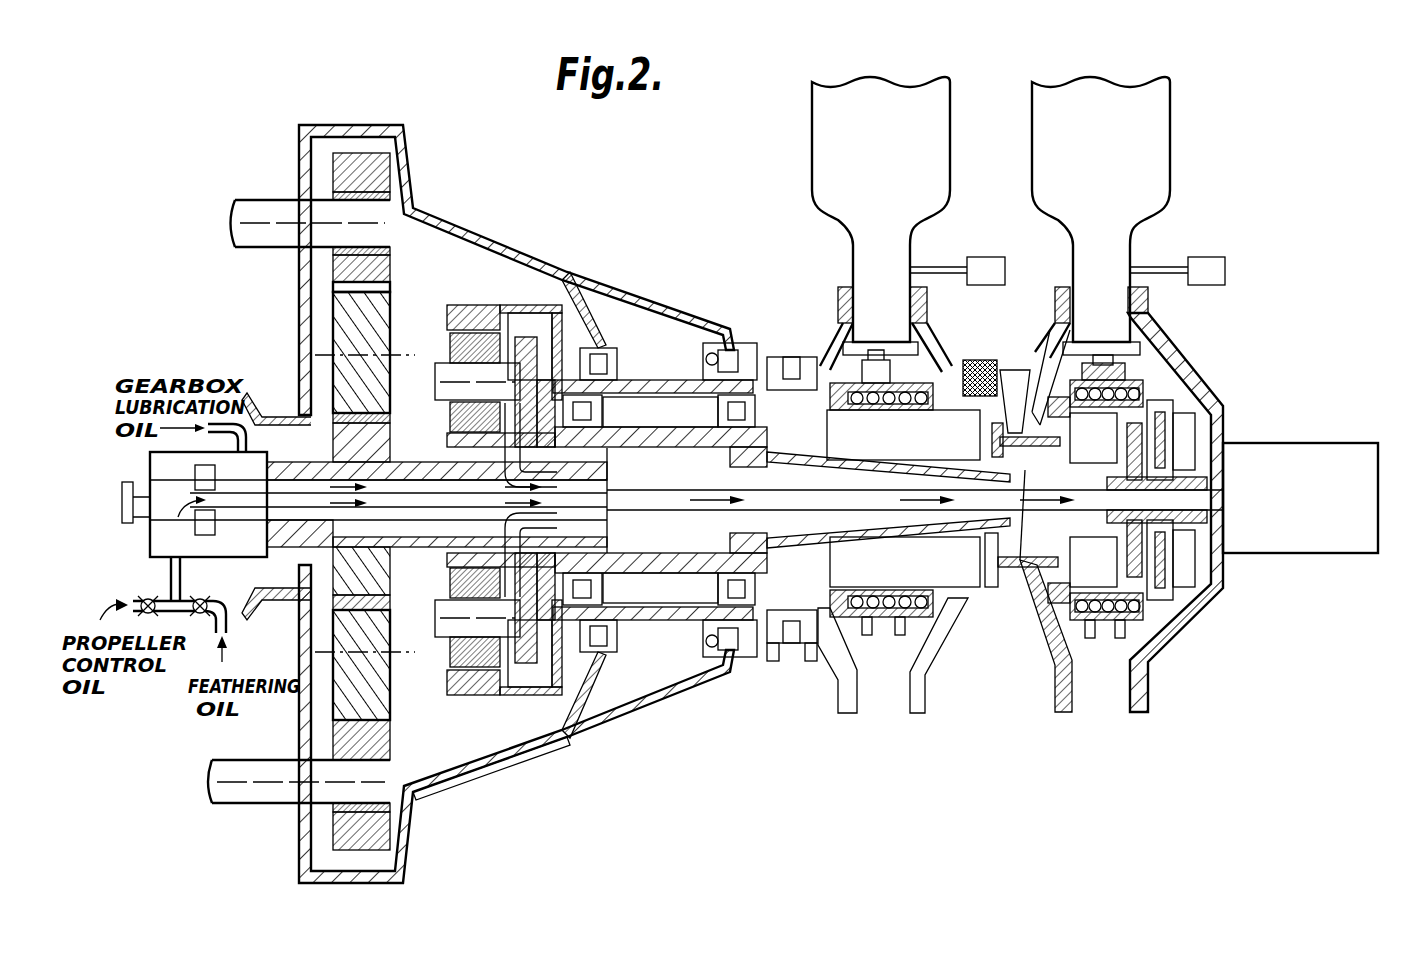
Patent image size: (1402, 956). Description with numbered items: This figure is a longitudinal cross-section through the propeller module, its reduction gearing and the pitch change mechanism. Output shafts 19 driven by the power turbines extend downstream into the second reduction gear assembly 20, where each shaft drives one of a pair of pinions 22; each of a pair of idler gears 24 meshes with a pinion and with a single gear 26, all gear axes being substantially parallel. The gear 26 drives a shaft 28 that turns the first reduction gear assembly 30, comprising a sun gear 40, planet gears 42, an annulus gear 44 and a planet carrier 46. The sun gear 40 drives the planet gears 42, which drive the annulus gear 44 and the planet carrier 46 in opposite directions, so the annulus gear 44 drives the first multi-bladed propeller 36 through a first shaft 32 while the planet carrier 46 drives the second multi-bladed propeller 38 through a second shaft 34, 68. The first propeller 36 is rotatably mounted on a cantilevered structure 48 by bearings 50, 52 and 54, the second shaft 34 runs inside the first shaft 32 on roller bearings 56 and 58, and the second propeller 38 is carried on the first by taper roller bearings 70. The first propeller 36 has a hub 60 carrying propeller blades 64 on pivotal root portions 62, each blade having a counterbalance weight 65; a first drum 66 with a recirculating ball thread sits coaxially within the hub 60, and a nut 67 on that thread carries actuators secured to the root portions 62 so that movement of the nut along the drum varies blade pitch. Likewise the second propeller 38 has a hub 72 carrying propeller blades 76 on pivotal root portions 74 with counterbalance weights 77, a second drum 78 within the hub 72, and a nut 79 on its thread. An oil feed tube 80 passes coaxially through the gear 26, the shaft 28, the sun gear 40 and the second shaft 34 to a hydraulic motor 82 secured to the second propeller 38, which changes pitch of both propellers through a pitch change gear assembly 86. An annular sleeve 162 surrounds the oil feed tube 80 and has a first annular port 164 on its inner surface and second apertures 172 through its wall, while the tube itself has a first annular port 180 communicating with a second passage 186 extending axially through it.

The output shaft 19 is at (268, 212).
The second reduction gear assembly 20 is at (417, 752).
The pinion 22 is at (375, 178).
The idler gear 24 is at (372, 305).
The gear 26 is at (372, 568).
The shaft 28 is at (420, 462).
The first reduction gear assembly 30 is at (484, 298).
The first shaft 32 is at (642, 392).
The second shaft 34 is at (640, 450).
The first multi-bladed propeller 36 is at (875, 223).
The second multi-bladed propeller 38 is at (1140, 228).
The sun gear 40 is at (435, 618).
The planet gear 42 is at (505, 700).
The annulus gear 44 is at (490, 692).
The planet carrier 46 is at (570, 735).
The cantilevered structure 48 is at (480, 292).
The bearing 50 is at (598, 345).
The bearing 52 is at (698, 345).
The bearing 54 is at (732, 345).
The roller bearing 56 is at (622, 392).
The roller bearing 58 is at (776, 392).
The hub 60 is at (930, 325).
The pivotal root portion 62 is at (890, 268).
The propeller blade 64 is at (930, 130).
The counterbalance weight 65 is at (990, 275).
The first drum 66 is at (882, 410).
The nut 67 is at (856, 395).
The second shaft 68 is at (800, 460).
The taper roller bearing 70 is at (985, 358).
The hub 72 is at (1142, 383).
The pivotal root portion 74 is at (1115, 310).
The propeller blade 76 is at (1140, 208).
The counterbalance weight 77 is at (1207, 257).
The second drum 78 is at (1162, 398).
The nut 79 is at (1148, 365).
The oil feed tube 80 is at (640, 515).
The hydraulic motor 82 is at (1324, 460).
The pitch change gear assembly 86 is at (1170, 596).
The annular sleeve 162 is at (1025, 585).
The first annular port 164 is at (1082, 612).
The second aperture 172 is at (975, 558).
The first annular port 180 is at (985, 438).
The second passage 186 is at (1043, 383).